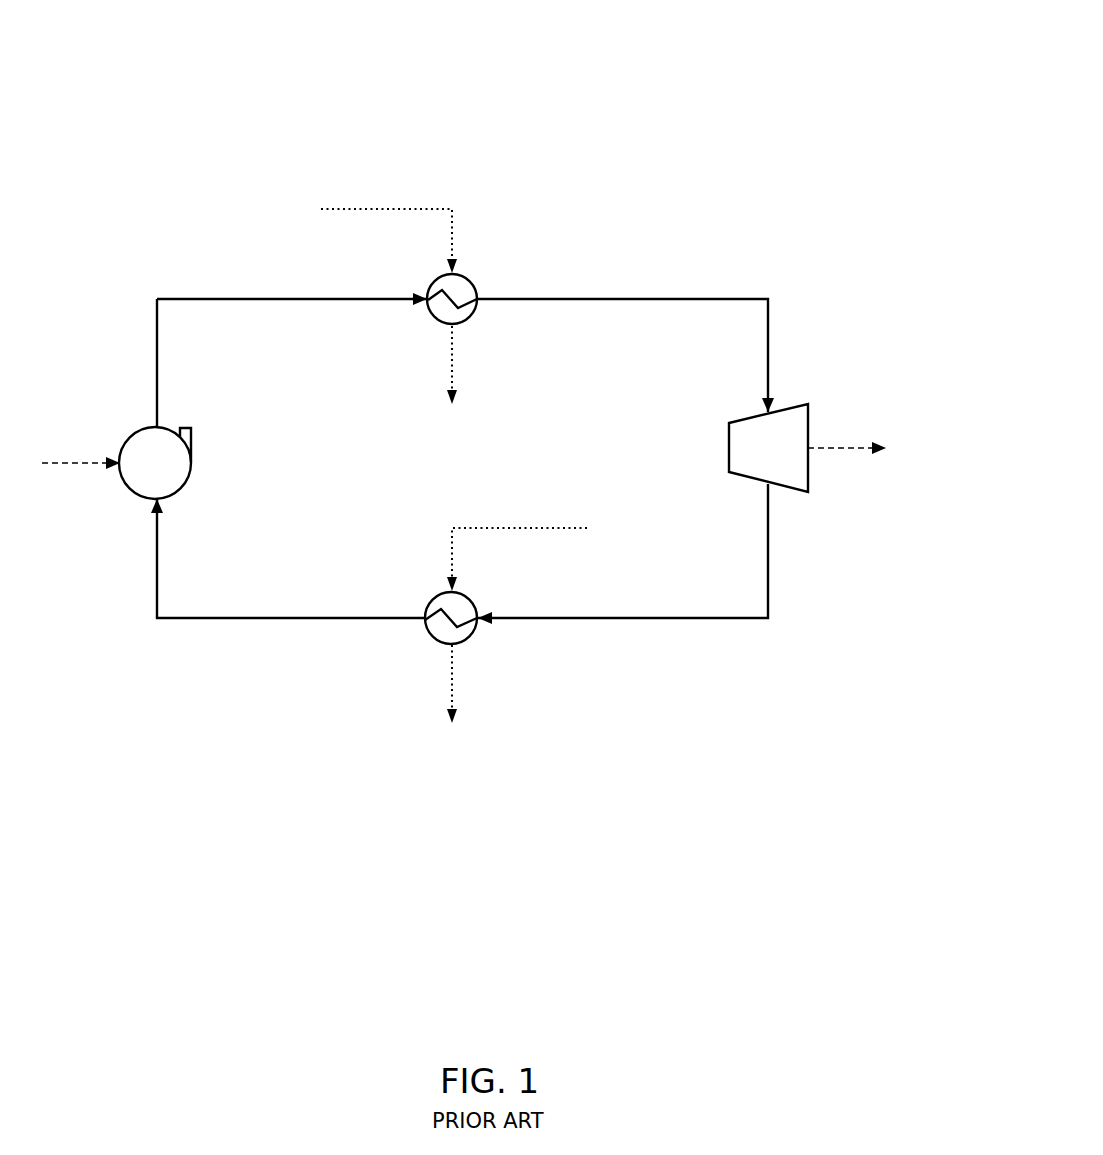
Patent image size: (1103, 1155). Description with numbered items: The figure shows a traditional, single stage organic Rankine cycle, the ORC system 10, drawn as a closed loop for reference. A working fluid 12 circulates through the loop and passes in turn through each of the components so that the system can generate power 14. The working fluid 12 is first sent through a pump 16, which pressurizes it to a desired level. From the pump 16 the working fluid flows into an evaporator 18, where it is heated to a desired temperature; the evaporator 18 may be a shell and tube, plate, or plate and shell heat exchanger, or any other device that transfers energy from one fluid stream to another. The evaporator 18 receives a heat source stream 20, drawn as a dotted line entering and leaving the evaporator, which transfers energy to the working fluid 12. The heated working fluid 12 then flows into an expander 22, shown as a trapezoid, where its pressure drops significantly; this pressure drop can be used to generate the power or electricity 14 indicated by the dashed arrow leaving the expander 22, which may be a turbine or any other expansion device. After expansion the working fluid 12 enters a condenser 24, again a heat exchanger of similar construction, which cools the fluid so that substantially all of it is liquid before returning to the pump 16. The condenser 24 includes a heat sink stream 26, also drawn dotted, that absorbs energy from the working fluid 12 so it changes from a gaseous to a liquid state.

The ORC system 10 is at (688, 47).
The working fluid 12 is at (642, 298).
The power 14 is at (846, 446).
The pump 16 is at (141, 475).
The evaporator 18 is at (470, 282).
The heat source stream 20 is at (403, 208).
The expander 22 is at (754, 460).
The condenser 24 is at (469, 598).
The heat sink stream 26 is at (518, 527).